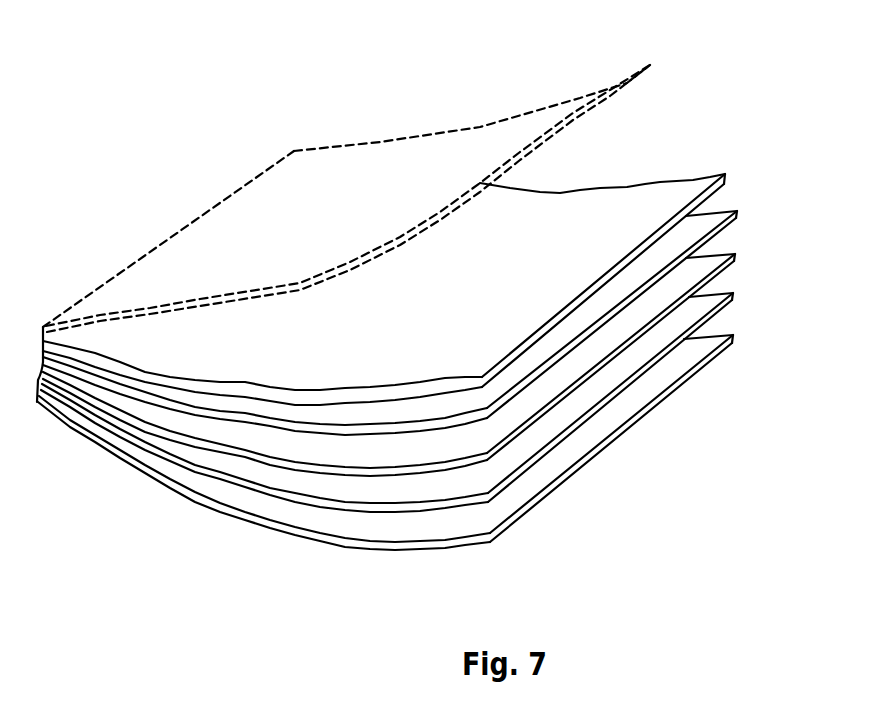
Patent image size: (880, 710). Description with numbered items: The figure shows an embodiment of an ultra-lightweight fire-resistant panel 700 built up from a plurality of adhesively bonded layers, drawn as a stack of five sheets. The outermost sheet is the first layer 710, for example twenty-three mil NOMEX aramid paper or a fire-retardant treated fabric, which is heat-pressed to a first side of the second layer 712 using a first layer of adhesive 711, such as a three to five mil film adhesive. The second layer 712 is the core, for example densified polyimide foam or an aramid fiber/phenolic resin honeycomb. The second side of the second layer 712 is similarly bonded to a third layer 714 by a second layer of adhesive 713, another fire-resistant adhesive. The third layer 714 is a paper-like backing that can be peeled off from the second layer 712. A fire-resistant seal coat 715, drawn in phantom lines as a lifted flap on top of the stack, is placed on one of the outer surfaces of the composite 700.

The ultra-lightweight panel 700 is at (433, 291).
The first layer 710 is at (728, 174).
The first layer of adhesive 711 is at (740, 210).
The second layer 712 is at (739, 253).
The second layer of adhesive 713 is at (738, 293).
The third layer 714 is at (738, 336).
The fire-resistant seal coat 715 is at (498, 122).